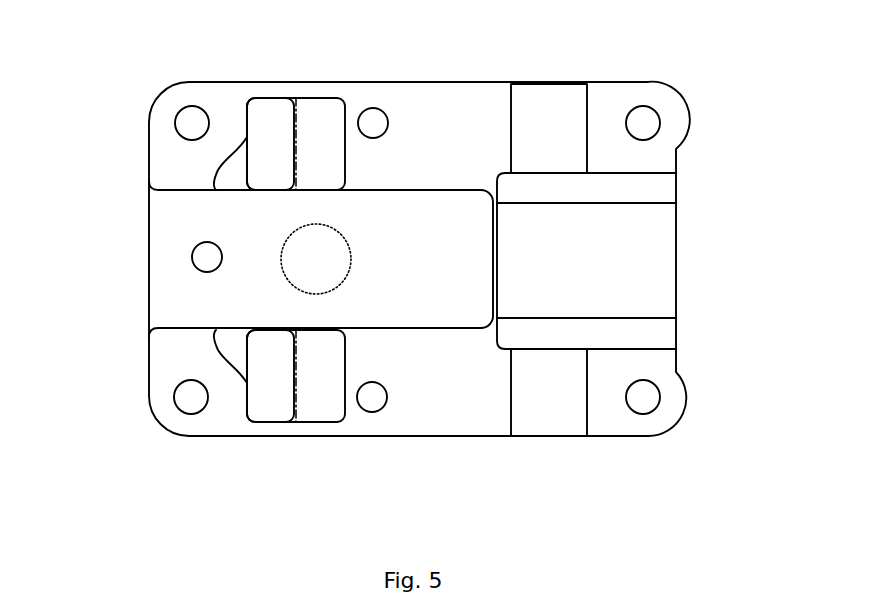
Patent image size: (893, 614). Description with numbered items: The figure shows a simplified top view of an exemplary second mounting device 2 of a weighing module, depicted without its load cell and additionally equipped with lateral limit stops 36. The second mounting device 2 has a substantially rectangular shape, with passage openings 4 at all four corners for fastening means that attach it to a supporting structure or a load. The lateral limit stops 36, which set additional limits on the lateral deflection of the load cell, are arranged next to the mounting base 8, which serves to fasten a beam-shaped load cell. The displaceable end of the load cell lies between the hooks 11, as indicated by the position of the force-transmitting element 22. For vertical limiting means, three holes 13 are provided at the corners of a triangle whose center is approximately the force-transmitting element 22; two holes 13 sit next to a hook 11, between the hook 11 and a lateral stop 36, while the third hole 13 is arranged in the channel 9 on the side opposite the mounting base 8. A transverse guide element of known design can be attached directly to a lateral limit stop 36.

The second mounting device 2 is at (442, 395).
The passage openings 4 is at (192, 123).
The mounting base 8 is at (630, 278).
The channel 9 is at (180, 292).
The hooks 11 is at (302, 123).
The passage openings or holes 13 is at (374, 125).
The force-transmitting element 22 is at (283, 265).
The lateral limit stops 36 is at (540, 122).